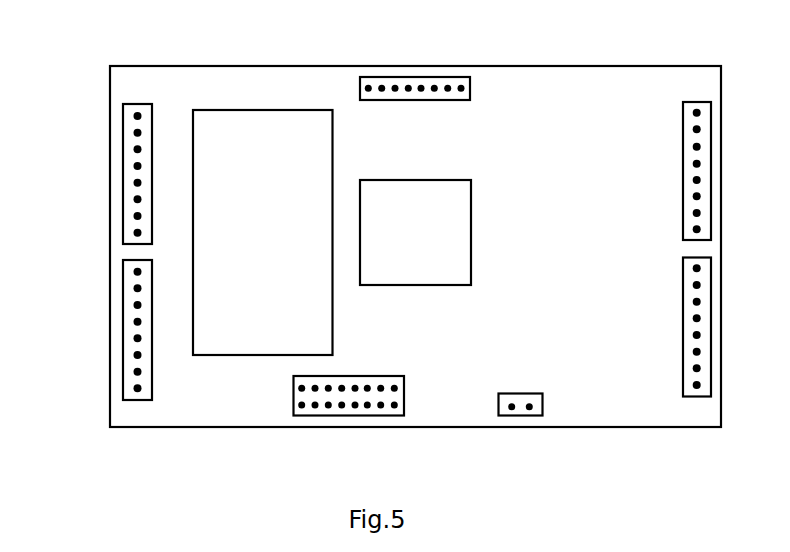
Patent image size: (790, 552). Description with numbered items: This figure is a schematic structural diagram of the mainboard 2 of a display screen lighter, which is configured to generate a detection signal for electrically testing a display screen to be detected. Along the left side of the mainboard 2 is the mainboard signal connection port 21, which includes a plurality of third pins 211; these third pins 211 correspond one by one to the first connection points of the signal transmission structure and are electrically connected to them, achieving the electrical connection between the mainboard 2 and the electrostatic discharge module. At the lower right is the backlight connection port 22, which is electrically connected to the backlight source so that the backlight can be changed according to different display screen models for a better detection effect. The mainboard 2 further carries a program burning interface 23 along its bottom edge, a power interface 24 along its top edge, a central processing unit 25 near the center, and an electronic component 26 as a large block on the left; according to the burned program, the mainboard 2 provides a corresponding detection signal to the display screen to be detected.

The mainboard 2 is at (193, 398).
The mainboard signal connection port 21 is at (127, 277).
The third pin 211 is at (138, 323).
The backlight connection port 22 is at (521, 415).
The program burning interface 23 is at (349, 408).
The power interface 24 is at (416, 86).
The central processing unit 25 is at (443, 245).
The electronic component 26 is at (248, 205).